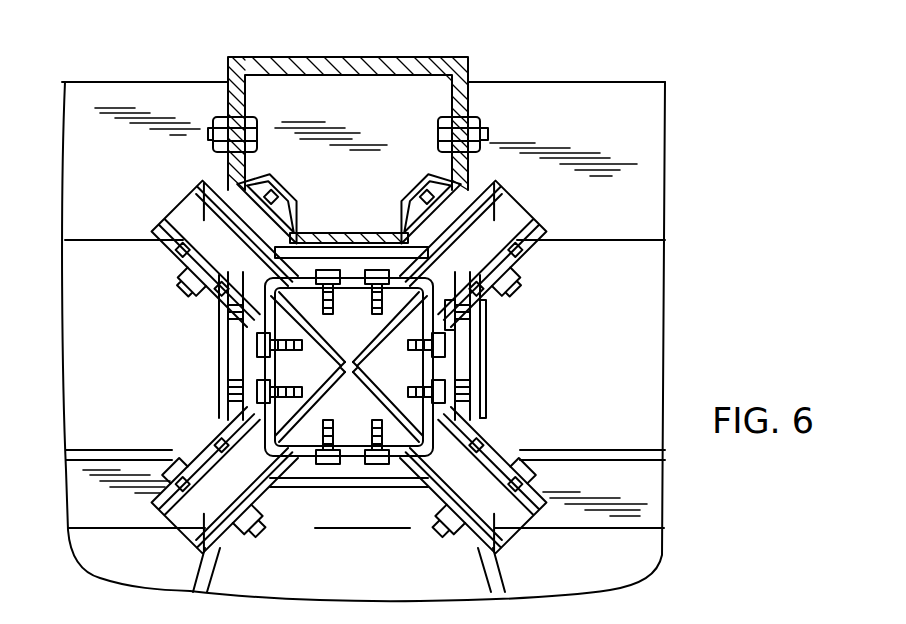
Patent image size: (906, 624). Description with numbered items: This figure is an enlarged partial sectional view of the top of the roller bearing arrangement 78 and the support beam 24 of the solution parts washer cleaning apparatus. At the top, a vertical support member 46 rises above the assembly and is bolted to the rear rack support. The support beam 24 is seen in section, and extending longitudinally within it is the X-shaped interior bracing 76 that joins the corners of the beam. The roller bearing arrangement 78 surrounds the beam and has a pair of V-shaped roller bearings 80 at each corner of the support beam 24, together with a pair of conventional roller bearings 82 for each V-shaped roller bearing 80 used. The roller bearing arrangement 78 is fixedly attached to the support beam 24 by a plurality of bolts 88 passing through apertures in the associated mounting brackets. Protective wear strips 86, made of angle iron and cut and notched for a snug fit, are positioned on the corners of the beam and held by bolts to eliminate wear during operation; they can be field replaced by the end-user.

The vertical support member 46 is at (470, 83).
The conventional roller bearings 82 is at (495, 206).
The V-shaped roller bearings 80 is at (515, 213).
The protective wear strips 86 is at (479, 322).
The roller bearing arrangement 78 is at (480, 350).
The support beam 24 is at (258, 367).
The bolts 88 is at (445, 393).
The X-shaped interior bracing 76 is at (374, 386).